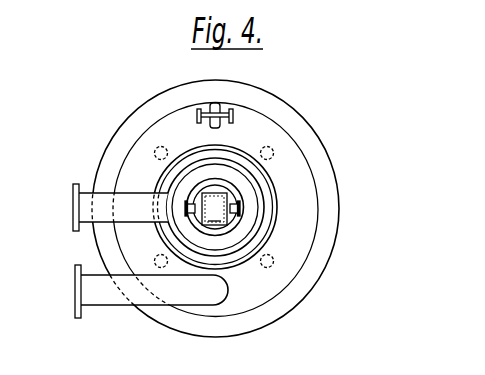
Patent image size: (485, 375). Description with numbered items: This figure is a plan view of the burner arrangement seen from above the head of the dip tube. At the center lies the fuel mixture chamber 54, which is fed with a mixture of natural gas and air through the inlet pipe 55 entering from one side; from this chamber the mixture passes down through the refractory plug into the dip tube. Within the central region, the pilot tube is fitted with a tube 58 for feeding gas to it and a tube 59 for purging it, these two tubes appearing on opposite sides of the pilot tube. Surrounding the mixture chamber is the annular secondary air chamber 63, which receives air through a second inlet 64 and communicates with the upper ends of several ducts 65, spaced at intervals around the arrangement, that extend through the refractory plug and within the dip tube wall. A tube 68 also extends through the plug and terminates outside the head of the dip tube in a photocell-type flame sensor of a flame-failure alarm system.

The fuel mixture chamber 54 is at (250, 221).
The inlet pipe 55 is at (102, 197).
The tube for feeding gas 58 is at (191, 204).
The tube for purging the pilot tube 59 is at (240, 205).
The annular secondary air chamber 63 is at (155, 127).
The inlet 64 is at (95, 297).
The ducts 65 is at (272, 266).
The tube 68 is at (231, 104).